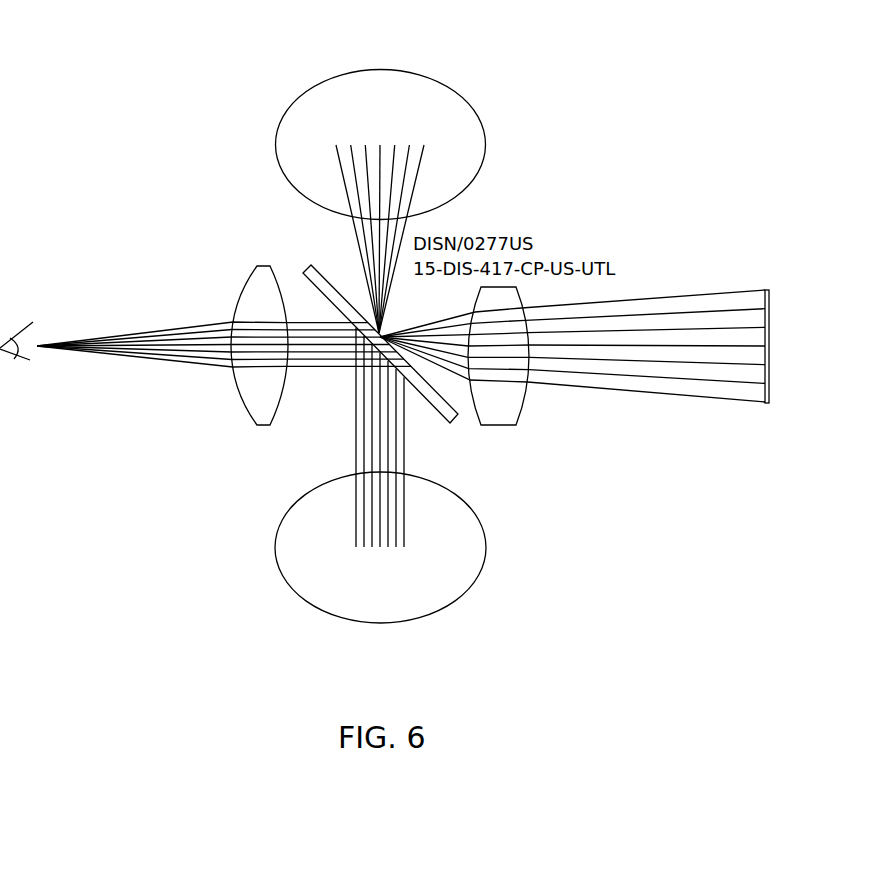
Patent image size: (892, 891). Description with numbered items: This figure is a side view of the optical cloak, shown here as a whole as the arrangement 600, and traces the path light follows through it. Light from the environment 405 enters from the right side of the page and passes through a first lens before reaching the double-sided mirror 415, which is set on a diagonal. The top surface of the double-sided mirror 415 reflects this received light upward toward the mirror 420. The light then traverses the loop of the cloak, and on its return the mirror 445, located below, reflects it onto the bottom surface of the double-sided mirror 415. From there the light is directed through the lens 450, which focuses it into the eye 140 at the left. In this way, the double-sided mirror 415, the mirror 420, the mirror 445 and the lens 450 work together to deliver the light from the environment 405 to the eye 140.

The optical system 600 is at (172, 58).
The mirror 420 is at (460, 92).
The lens 450 is at (240, 295).
The double-sided mirror 415 is at (452, 408).
The environment 405 is at (769, 290).
The mirror 445 is at (480, 523).
The eye 140 is at (0, 371).